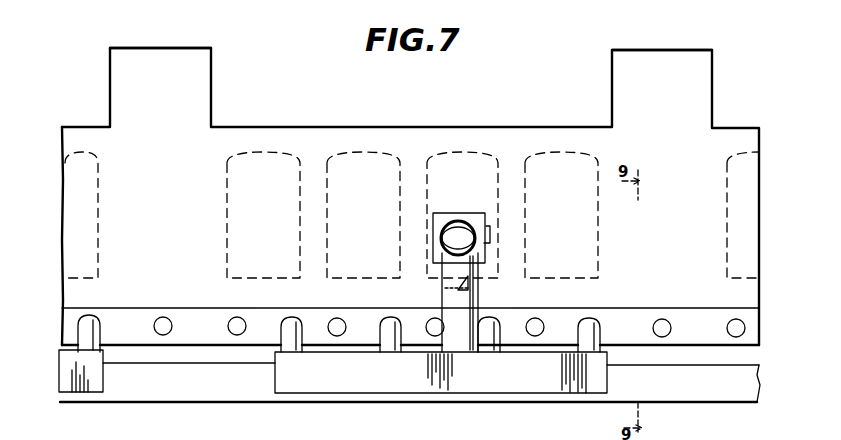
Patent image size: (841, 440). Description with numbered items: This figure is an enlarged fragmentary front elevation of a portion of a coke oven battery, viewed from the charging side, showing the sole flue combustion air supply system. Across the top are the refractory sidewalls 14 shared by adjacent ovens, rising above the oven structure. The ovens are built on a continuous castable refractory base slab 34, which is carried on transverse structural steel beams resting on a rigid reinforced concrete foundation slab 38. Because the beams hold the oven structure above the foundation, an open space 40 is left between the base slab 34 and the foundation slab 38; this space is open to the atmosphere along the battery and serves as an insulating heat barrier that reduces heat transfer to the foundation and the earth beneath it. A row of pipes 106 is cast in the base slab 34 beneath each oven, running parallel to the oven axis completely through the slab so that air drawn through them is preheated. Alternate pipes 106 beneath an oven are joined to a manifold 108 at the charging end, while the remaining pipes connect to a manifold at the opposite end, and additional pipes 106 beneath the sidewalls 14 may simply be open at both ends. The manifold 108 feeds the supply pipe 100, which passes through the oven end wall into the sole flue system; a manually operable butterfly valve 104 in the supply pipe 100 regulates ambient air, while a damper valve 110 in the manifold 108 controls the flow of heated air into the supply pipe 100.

The sidewall 14 is at (205, 80).
The base slab 34 is at (757, 320).
The foundation slab 38 is at (750, 395).
The space 40 is at (746, 356).
The supply pipe 100 is at (455, 213).
The butterfly valve 104 is at (492, 233).
The pipes 106 is at (233, 334).
The manifold 108 is at (381, 384).
The damper valve 110 is at (481, 281).